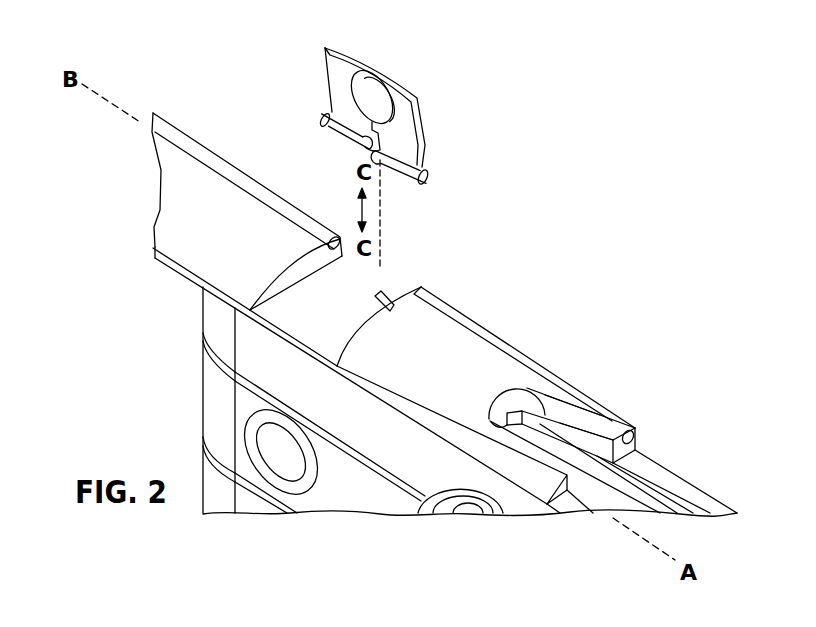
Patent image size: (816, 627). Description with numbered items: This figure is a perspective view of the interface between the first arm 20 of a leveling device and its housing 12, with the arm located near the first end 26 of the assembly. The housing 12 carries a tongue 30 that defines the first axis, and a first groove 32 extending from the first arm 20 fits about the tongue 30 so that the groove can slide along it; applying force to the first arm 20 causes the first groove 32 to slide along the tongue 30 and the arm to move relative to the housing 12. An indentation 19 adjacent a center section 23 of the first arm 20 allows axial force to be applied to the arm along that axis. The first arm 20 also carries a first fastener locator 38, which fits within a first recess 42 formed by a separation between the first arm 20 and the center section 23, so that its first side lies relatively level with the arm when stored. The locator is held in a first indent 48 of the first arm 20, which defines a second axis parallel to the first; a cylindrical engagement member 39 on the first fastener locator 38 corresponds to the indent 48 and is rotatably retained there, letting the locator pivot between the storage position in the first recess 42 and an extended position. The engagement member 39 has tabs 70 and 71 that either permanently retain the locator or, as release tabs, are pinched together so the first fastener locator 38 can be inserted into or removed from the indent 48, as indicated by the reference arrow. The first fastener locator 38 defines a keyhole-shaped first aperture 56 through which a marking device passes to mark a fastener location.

The housing 12 is at (340, 490).
The indentation 19 is at (568, 420).
The first arm 20 is at (174, 218).
The center section 23 is at (600, 423).
The first end 26 is at (203, 373).
The tongue 30 is at (552, 432).
The first groove 32 is at (520, 412).
The first fastener locator 38 is at (403, 132).
The engagement member 39 is at (347, 142).
The first recess 42 is at (351, 316).
The first indent 48 is at (338, 240).
The first aperture 56 is at (360, 100).
The tab 70 is at (432, 182).
The tab 71 is at (322, 113).